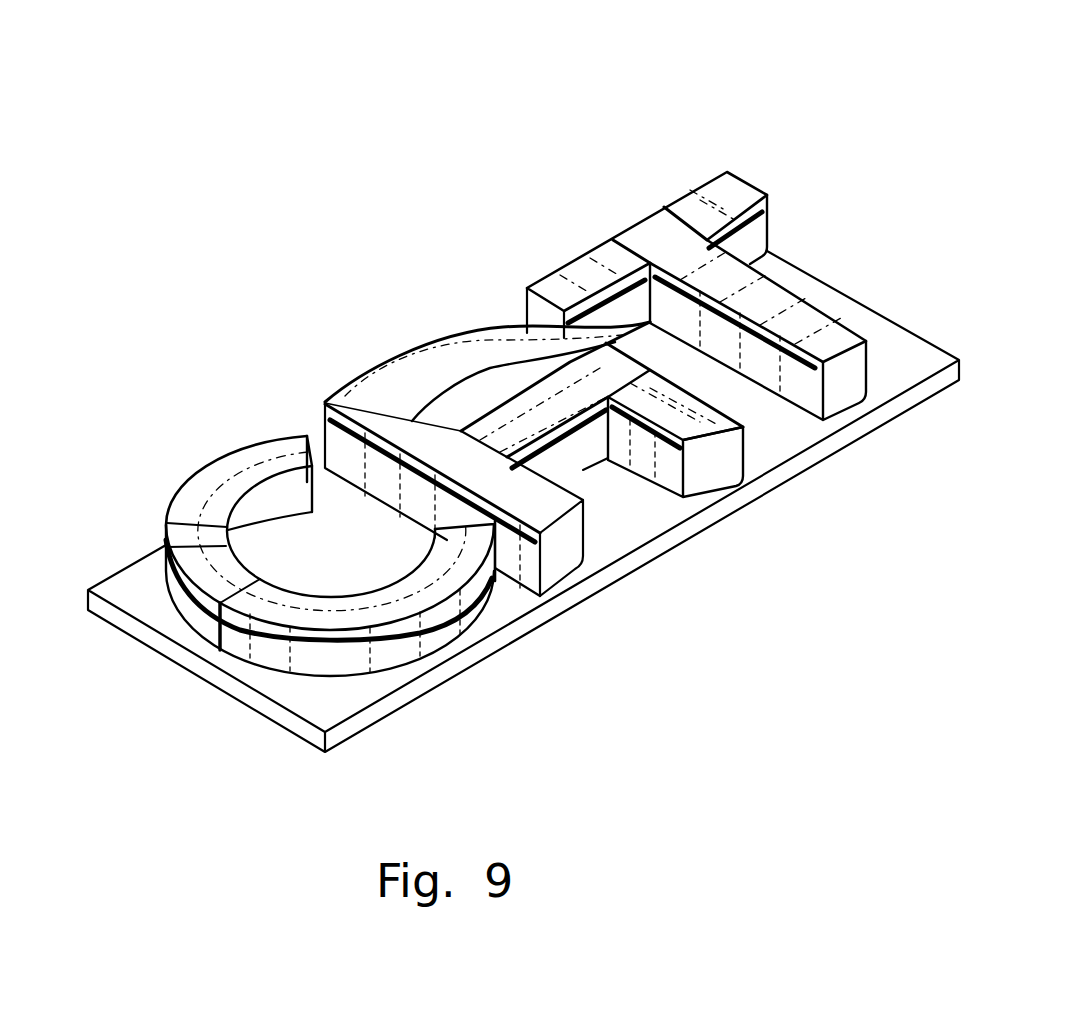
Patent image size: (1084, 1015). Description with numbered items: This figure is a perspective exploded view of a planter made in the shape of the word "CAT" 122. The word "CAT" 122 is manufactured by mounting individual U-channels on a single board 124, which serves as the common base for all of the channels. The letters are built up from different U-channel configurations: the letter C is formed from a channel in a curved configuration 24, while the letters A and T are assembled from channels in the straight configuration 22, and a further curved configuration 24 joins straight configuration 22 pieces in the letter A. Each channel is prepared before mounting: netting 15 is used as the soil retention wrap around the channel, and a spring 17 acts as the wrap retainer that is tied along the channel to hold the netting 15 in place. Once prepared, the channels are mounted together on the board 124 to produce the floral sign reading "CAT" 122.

The word "CAT" 122 is at (441, 110).
The single board 124 is at (310, 734).
The netting 15 is at (263, 443).
The spring 17 is at (405, 640).
The curved configuration 24 is at (211, 463).
The straight configuration 22 is at (573, 257).